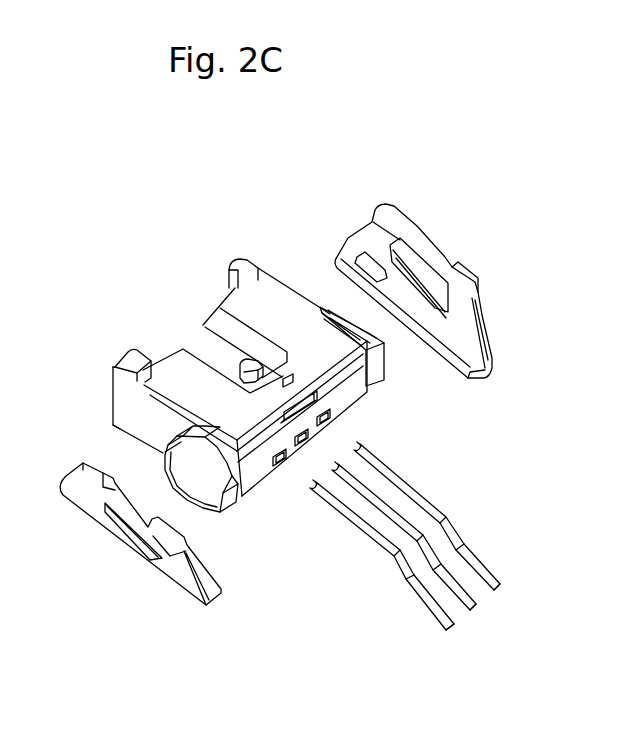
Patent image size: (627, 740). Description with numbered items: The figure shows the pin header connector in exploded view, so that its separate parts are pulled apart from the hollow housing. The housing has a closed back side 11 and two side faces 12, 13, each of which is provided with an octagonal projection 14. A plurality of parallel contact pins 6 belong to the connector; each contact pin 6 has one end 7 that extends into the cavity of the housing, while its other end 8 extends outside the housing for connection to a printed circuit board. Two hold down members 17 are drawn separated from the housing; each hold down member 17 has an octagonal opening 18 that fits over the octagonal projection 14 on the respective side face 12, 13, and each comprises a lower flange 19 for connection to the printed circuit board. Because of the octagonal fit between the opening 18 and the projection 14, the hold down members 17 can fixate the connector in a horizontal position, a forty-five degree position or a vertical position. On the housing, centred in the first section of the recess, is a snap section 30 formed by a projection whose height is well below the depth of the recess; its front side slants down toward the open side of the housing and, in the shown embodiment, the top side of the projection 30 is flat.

The contact pin 6 is at (405, 561).
The end of contact pin 7 is at (350, 504).
The other end of contact pin 8 is at (452, 617).
The closed back side 11 is at (260, 472).
The side face 12 is at (155, 412).
The side face 13 is at (292, 286).
The octagonal projection 14 is at (336, 307).
The hold down member 17 is at (480, 308).
The octagonal opening 18 is at (428, 262).
The lower flange 19 is at (480, 372).
The snap section 30 is at (245, 362).